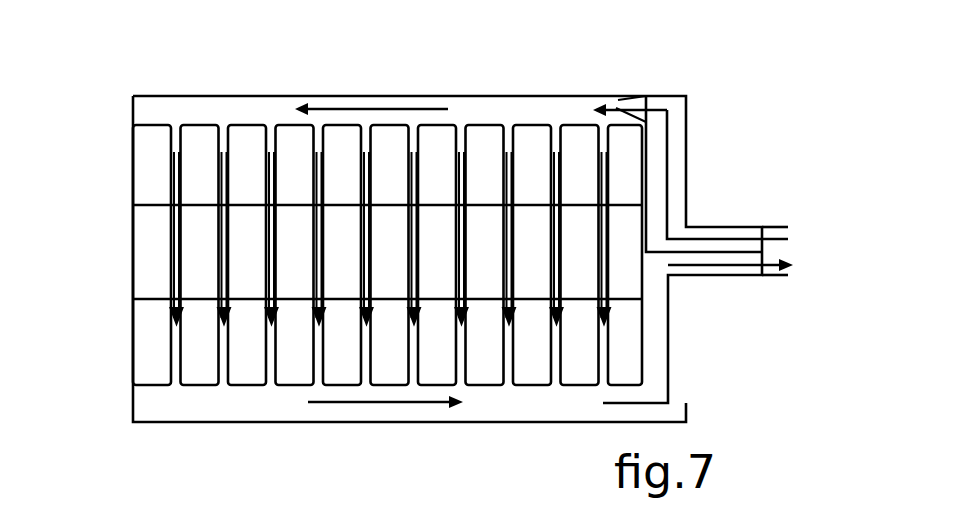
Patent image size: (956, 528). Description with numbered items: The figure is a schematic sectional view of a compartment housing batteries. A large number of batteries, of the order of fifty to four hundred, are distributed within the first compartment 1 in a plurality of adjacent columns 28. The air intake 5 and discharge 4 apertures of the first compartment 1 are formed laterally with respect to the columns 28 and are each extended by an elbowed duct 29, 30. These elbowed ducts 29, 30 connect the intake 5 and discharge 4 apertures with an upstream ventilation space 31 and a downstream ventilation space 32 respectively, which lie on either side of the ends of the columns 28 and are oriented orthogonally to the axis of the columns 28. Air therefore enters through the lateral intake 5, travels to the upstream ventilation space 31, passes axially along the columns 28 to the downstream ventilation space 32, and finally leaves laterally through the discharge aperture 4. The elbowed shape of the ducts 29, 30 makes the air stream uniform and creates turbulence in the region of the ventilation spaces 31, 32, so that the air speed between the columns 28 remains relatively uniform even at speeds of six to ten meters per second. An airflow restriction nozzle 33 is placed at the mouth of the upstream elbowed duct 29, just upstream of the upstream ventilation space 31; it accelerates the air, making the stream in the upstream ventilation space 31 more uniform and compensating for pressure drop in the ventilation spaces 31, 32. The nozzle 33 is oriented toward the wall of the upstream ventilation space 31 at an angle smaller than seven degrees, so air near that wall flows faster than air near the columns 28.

The first compartment 1 is at (286, 72).
The columns 28 is at (148, 250).
The upstream elbowed duct 29 is at (687, 138).
The downstream elbowed duct 30 is at (687, 352).
The upstream ventilation space 31 is at (444, 96).
The downstream ventilation space 32 is at (512, 422).
The airflow restriction nozzle 33 is at (618, 101).
The air intake aperture 5 is at (739, 227).
The discharge aperture 4 is at (735, 275).